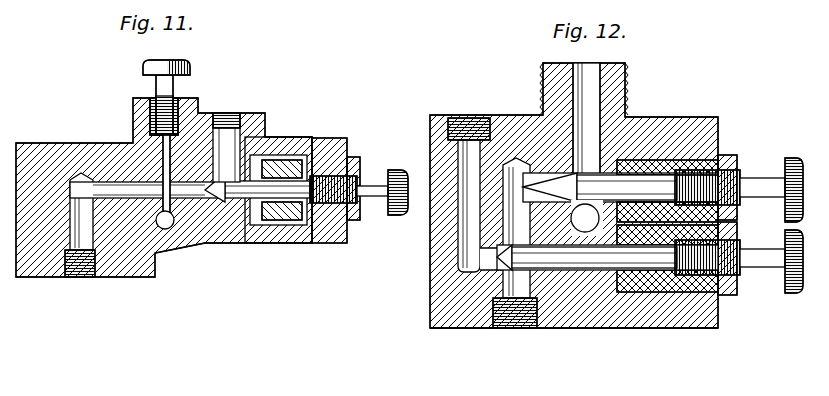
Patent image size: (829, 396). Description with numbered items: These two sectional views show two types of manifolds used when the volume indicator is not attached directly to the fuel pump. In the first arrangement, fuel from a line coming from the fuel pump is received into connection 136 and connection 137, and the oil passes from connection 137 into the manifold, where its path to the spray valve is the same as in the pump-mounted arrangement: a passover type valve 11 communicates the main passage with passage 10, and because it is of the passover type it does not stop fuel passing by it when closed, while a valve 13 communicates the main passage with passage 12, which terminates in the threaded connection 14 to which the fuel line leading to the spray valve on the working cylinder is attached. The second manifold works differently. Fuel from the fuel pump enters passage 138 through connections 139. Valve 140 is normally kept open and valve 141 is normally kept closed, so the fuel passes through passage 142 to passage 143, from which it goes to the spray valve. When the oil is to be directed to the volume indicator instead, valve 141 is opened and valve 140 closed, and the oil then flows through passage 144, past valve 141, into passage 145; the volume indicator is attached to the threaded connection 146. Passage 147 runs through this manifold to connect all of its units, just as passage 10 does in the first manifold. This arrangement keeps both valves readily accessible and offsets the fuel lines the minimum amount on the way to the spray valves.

In FIG. 11, the passage 10 is at (170, 228).
In FIG. 11, the valve 11 is at (175, 88).
In FIG. 11, the passage 12 is at (262, 125).
In FIG. 11, the valve 13 is at (297, 137).
In FIG. 11, the threaded connection 14 is at (228, 117).
In FIG. 11, the connection 136 is at (85, 273).
In FIG. 11, the connection 137 is at (63, 262).
In FIG. 12, the passage 138 is at (457, 328).
In FIG. 12, the connections 139 is at (508, 328).
In FIG. 12, the valve 140 is at (633, 278).
In FIG. 12, the valve 141 is at (690, 117).
In FIG. 12, the passage 142 is at (455, 278).
In FIG. 12, the passage 143 is at (470, 210).
In FIG. 12, the passage 144 is at (453, 250).
In FIG. 12, the passage 145 is at (588, 117).
In FIG. 12, the threaded connection 146 is at (625, 83).
In FIG. 12, the passage 147 is at (583, 223).